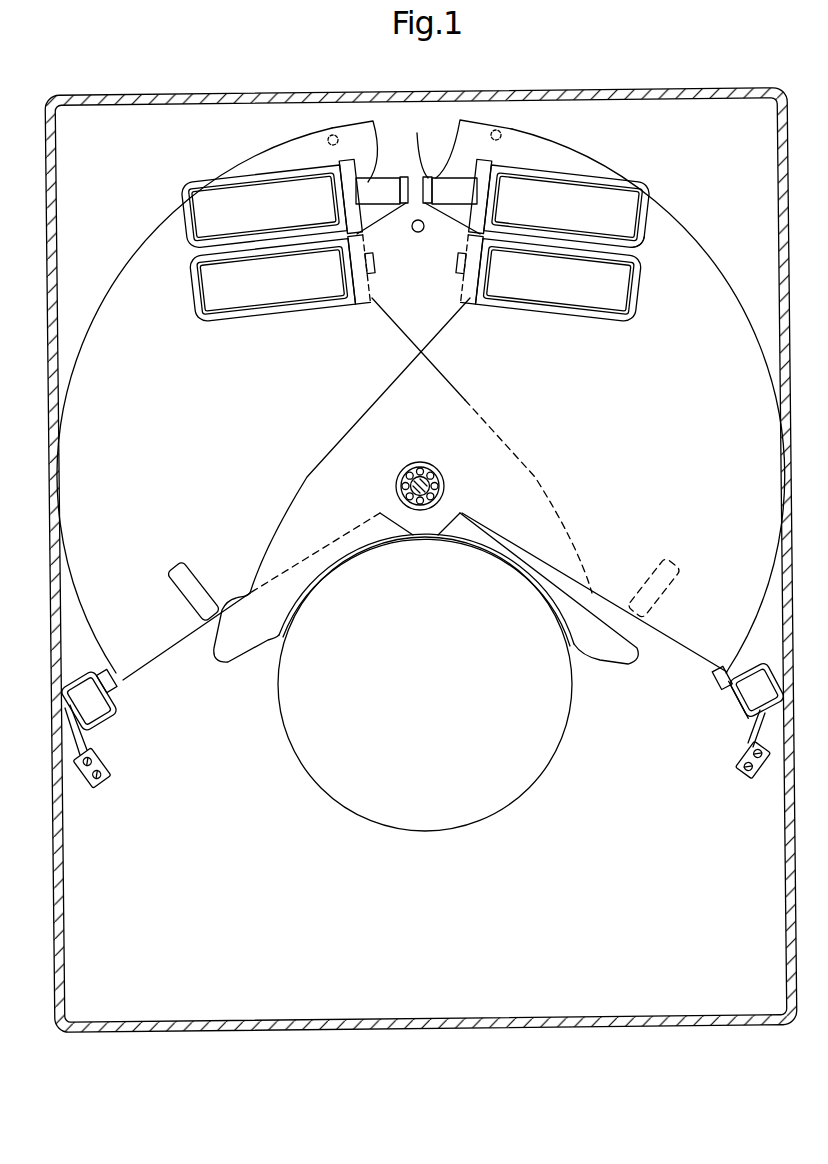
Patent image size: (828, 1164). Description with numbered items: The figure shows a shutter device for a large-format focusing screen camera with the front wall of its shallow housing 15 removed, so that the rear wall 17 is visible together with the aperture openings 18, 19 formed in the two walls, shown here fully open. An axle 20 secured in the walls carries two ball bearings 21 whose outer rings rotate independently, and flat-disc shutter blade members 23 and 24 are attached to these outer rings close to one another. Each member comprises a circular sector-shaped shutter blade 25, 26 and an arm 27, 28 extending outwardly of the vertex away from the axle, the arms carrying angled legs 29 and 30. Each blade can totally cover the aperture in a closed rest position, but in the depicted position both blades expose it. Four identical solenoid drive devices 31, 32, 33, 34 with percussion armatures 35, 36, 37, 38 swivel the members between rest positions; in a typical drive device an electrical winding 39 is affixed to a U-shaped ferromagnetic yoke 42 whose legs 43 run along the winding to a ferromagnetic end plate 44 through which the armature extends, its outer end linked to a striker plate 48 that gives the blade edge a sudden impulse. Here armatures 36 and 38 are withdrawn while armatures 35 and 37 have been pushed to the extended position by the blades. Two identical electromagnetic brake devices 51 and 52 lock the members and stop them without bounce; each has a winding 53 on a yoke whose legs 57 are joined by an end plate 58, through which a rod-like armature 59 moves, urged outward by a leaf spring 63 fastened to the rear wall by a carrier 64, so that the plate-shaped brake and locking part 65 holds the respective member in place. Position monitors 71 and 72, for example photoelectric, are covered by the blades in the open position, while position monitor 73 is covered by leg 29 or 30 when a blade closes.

The shutter housing 15 is at (181, 108).
The rear wall 17 is at (245, 120).
The opening 18 is at (425, 684).
The opening 19 is at (326, 794).
The axle 20 is at (437, 470).
The ball bearings 21 is at (409, 472).
The shutter blade member 23 is at (535, 430).
The shutter blade member 24 is at (214, 474).
The shutter blade 25 is at (725, 318).
The shutter blade 26 is at (122, 300).
The arm 27 is at (247, 662).
The arm 28 is at (600, 663).
The angled leg 29 is at (186, 566).
The angled leg 30 is at (660, 557).
The drive device 31 is at (621, 178).
The drive device 32 is at (238, 326).
The drive device 33 is at (183, 189).
The drive device 34 is at (602, 320).
The percussion armature 35 is at (436, 178).
The percussion armature 36 is at (370, 268).
The percussion armature 37 is at (375, 180).
The percussion armature 38 is at (467, 263).
The electrical winding 39 is at (629, 205).
The U-shaped yoke 42 is at (637, 229).
The yoke legs 43 is at (572, 176).
The end plate 44 is at (482, 180).
The striker plate 48 is at (416, 143).
The brake device 51 is at (745, 724).
The brake device 52 is at (119, 718).
The electrical winding 53 is at (749, 701).
The yoke legs 57 is at (769, 669).
The end plate 58 is at (742, 668).
The armature 59 is at (116, 690).
The leaf spring 63 is at (90, 741).
The carrier 64 is at (749, 776).
The brake and locking part 65 is at (124, 681).
The position monitor 71 is at (499, 130).
The position monitor 72 is at (330, 135).
The position monitor 73 is at (423, 231).